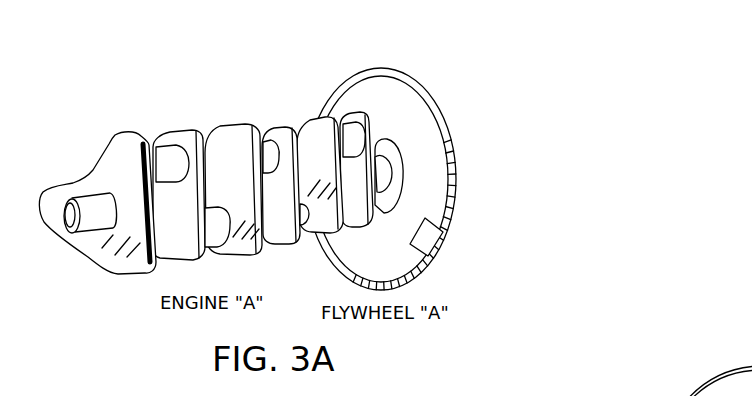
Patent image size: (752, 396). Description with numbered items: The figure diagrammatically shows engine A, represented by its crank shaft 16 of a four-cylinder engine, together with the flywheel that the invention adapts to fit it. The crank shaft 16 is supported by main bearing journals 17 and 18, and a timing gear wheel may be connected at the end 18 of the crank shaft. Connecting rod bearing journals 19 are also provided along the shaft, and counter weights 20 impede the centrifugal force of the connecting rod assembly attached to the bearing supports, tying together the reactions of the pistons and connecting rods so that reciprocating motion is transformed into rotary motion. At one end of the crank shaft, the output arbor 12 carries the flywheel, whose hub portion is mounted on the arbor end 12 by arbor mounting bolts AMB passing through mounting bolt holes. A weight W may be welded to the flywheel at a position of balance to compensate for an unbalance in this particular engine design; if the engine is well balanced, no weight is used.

The output arbor 12 is at (378, 172).
The crank shaft 16 is at (204, 168).
The main bearing journal 17 is at (379, 150).
The main bearing journal 18 is at (83, 203).
The connecting rod bearing journal 19 is at (350, 130).
The counter weight 20 is at (232, 145).
The arbor mounting bolt AMB is at (392, 195).
The weight W is at (428, 236).